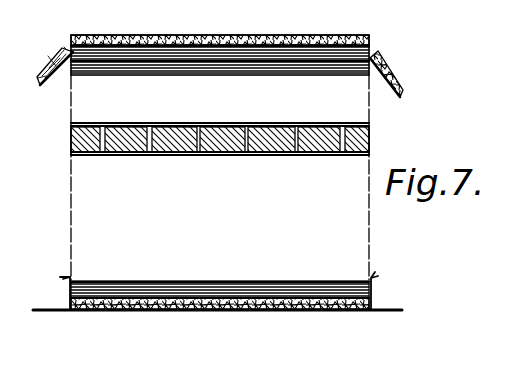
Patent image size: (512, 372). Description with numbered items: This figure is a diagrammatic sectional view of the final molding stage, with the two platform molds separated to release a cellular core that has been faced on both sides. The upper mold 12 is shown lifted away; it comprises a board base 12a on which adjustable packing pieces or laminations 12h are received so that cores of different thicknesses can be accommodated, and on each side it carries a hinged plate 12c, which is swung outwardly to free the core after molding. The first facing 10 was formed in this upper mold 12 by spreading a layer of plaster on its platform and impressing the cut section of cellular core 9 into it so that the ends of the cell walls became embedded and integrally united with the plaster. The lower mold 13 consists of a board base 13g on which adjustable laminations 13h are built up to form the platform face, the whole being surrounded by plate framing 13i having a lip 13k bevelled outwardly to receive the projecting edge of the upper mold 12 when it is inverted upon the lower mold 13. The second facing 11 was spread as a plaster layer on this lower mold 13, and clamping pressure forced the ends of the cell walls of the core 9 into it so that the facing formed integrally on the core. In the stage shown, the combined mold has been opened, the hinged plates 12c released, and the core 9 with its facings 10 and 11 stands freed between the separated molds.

The mold 12 is at (258, 35).
The board base 12a is at (143, 42).
The adjustable packing pieces or laminations 12h is at (305, 55).
The hinged plate 12c is at (49, 86).
The facing 10 is at (153, 123).
The cellular core 9 is at (333, 152).
The facing 11 is at (226, 156).
The mold 13 is at (165, 316).
The adjustable laminations 13h is at (143, 293).
The board base 13g is at (313, 308).
The lip 13k is at (72, 273).
The plate framing 13i is at (372, 292).